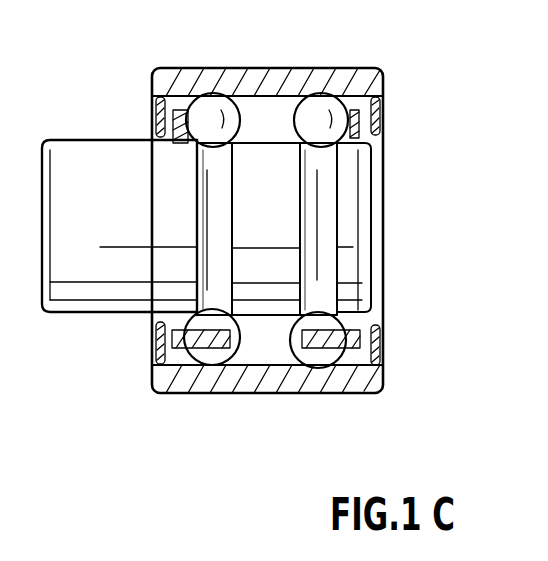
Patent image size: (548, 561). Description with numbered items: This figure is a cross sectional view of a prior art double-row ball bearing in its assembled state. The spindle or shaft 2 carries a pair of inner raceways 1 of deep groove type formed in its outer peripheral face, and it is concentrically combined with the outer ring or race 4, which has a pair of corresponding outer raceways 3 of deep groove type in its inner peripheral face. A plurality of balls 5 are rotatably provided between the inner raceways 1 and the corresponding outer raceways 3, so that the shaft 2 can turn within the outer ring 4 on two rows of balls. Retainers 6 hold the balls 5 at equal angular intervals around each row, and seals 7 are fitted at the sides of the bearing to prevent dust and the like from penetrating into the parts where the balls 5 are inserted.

The inner raceways 1 is at (320, 167).
The spindle or shaft 2 is at (270, 147).
The outer raceways 3 is at (218, 100).
The outer ring or race 4 is at (199, 93).
The balls 5 is at (195, 108).
The retainers 6 is at (356, 119).
The seals 7 is at (156, 99).